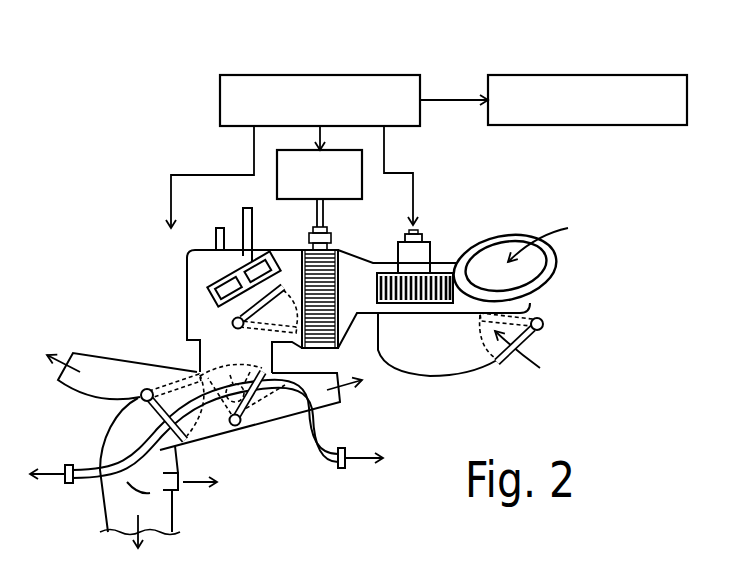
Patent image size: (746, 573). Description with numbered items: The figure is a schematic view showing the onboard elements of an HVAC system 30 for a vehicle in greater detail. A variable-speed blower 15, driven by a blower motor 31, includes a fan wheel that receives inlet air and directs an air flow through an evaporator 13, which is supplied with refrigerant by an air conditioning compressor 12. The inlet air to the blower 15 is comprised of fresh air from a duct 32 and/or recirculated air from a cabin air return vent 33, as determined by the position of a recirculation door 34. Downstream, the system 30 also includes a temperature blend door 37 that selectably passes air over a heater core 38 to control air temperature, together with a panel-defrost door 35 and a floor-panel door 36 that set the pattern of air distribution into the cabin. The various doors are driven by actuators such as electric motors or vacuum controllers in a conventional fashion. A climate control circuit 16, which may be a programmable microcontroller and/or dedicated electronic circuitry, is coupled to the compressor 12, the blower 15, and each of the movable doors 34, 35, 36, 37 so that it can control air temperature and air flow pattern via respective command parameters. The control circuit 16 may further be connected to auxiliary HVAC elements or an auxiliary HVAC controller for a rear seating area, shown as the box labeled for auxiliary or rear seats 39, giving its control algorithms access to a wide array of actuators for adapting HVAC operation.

The air conditioning compressor 12 is at (319, 174).
The evaporator 13 is at (310, 273).
The variable-speed blower 15 is at (441, 273).
The climate control circuit 16 is at (220, 100).
The HVAC system 30 is at (505, 196).
The blower motor 31 is at (398, 258).
The duct 32 is at (558, 274).
The cabin air return vent 33 is at (477, 376).
The recirculation door 34 is at (543, 335).
The panel-defrost door 35 is at (245, 405).
The floor-panel door 36 is at (130, 412).
The temperature blend door 37 is at (247, 313).
The heater core 38 is at (212, 298).
The auxiliary or rear seat HVAC unit 39 is at (607, 75).